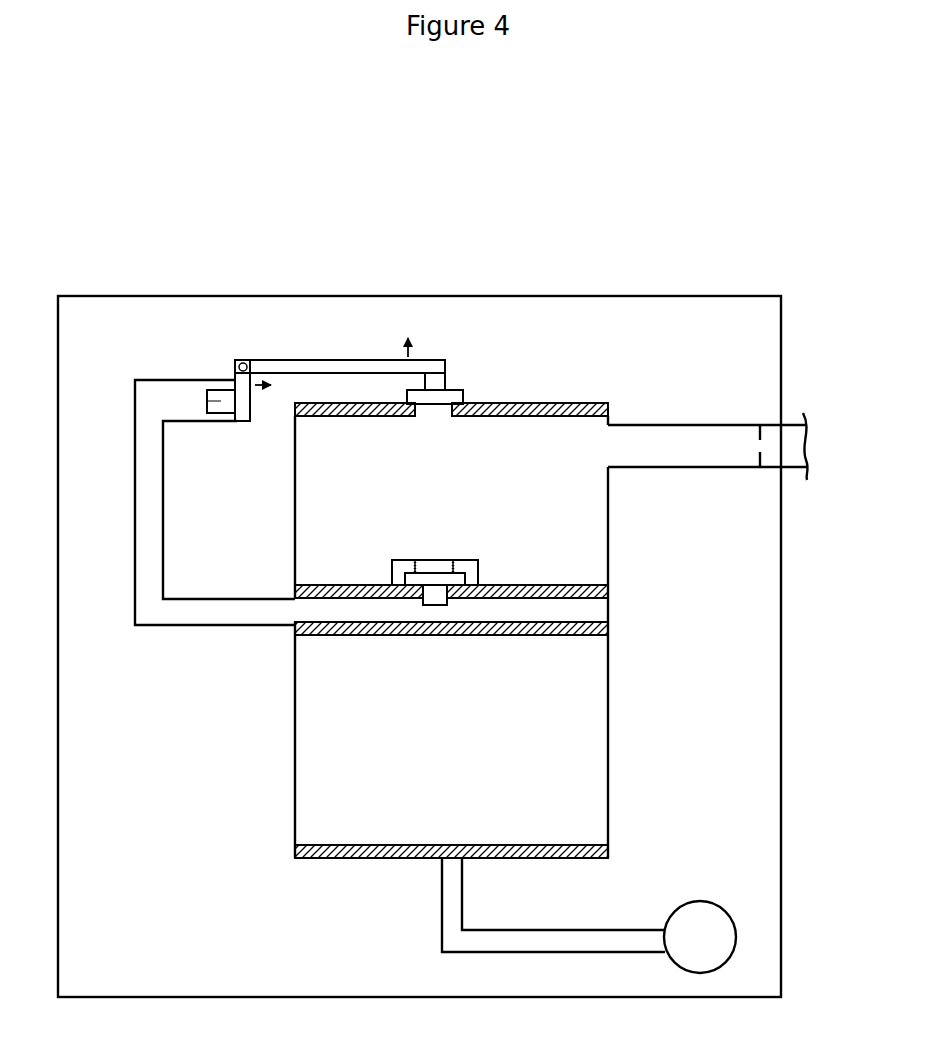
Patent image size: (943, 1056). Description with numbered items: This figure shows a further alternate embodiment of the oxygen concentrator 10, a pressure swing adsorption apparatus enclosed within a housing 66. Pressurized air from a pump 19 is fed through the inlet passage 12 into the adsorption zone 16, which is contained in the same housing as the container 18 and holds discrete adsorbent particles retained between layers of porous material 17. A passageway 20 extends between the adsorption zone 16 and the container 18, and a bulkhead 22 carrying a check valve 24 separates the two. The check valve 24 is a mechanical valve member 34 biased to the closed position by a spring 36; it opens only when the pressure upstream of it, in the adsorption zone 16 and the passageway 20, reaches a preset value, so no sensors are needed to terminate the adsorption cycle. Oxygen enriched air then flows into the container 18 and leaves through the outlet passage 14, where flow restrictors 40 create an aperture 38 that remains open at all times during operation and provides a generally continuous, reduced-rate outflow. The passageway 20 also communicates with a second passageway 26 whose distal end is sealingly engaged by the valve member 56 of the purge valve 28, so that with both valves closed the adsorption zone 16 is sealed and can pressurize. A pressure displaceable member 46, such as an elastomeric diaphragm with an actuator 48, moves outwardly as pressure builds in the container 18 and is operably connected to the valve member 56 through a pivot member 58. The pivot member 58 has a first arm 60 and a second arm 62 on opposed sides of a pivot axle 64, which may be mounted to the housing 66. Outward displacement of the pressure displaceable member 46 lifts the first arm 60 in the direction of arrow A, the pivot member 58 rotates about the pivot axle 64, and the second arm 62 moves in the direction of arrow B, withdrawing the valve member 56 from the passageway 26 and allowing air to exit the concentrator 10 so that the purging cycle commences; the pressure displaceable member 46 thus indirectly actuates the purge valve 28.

The concentrator 10 is at (655, 363).
The inlet passage 12 is at (510, 940).
The outlet passage 14 is at (777, 450).
The adsorption zone 16 is at (587, 741).
The porous material 17 is at (608, 627).
The container 18 is at (590, 503).
The pump 19 is at (708, 928).
The passageway 20 is at (590, 607).
The bulkhead 22 is at (590, 586).
The check valve 24 is at (463, 573).
The passageway 26 is at (147, 507).
The purge valve 28 is at (218, 420).
The valve member 34 is at (478, 585).
The spring 36 is at (478, 560).
The aperture 38 is at (757, 447).
The flow restrictors 40 is at (765, 430).
The pressure displaceable member 46 is at (463, 397).
The actuator 48 is at (445, 377).
The valve member 56 is at (220, 400).
The pivot member 58 is at (282, 352).
The first arm 60 is at (432, 363).
The second arm 62 is at (243, 400).
The pivot axle 64 is at (242, 362).
The housing 66 is at (752, 281).